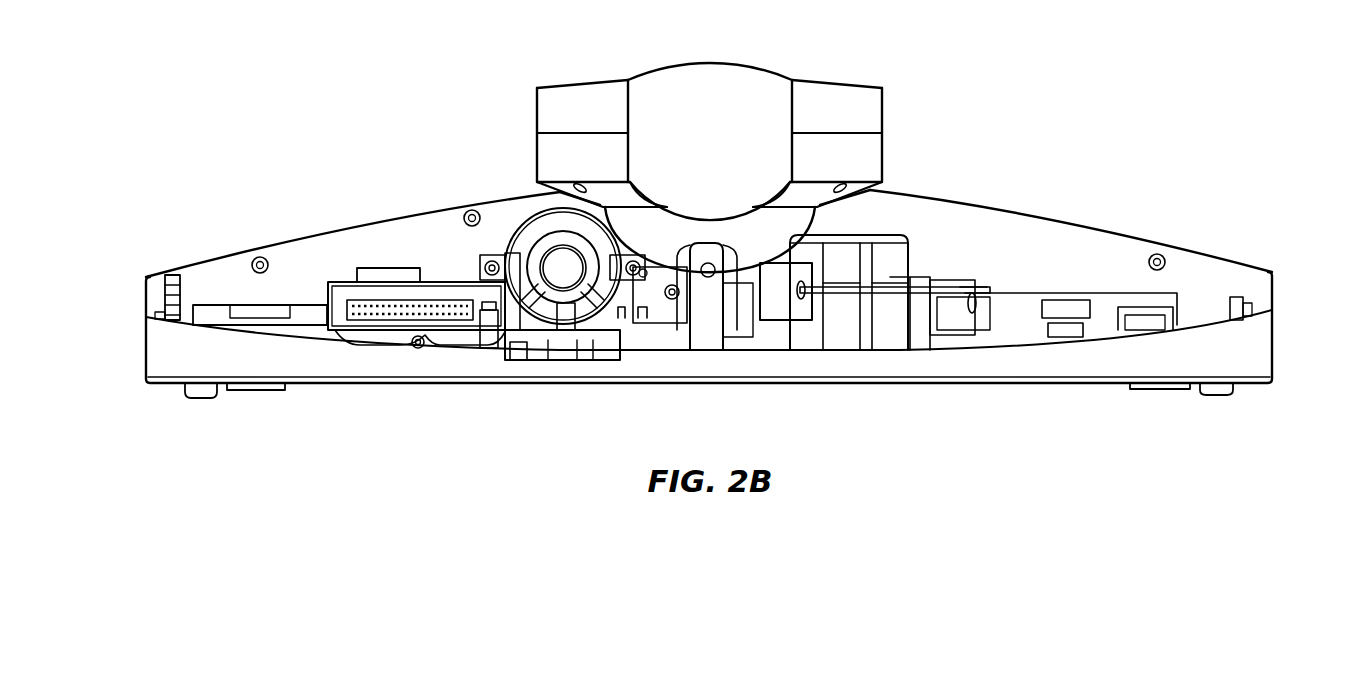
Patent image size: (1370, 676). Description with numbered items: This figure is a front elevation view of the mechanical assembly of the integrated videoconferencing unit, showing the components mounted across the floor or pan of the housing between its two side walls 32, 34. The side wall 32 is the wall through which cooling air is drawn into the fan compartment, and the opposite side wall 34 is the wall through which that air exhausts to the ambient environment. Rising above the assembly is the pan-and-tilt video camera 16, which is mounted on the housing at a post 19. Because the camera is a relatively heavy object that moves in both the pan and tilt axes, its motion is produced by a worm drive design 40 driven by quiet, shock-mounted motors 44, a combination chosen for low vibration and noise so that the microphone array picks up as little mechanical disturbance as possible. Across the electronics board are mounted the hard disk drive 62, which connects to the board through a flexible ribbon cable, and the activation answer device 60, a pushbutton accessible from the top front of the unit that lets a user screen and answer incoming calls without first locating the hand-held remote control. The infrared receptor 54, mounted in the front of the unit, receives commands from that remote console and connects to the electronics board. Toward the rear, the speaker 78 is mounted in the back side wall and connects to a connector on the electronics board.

The video camera 16 is at (882, 110).
The post 19 is at (718, 350).
The side wall 32 is at (1272, 345).
The side wall 34 is at (146, 350).
The worm drive design 40 is at (808, 321).
The motors 44 is at (653, 328).
The receptor 54 is at (517, 350).
The activation answer device 60 is at (180, 290).
The hard disk drive 62 is at (328, 300).
The speaker 78 is at (535, 227).